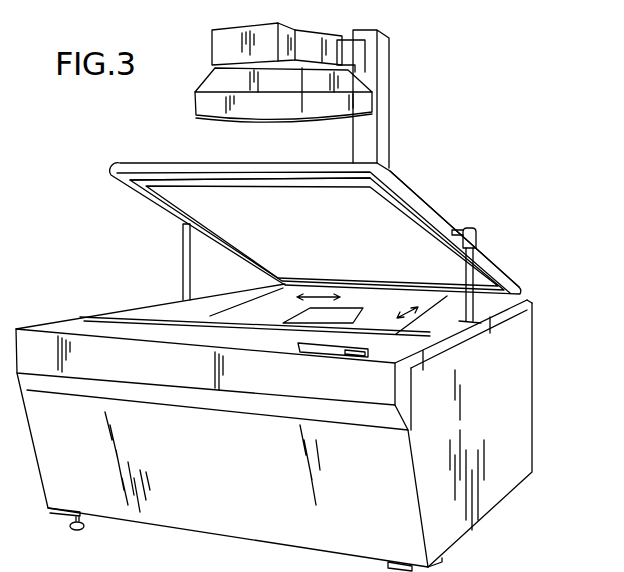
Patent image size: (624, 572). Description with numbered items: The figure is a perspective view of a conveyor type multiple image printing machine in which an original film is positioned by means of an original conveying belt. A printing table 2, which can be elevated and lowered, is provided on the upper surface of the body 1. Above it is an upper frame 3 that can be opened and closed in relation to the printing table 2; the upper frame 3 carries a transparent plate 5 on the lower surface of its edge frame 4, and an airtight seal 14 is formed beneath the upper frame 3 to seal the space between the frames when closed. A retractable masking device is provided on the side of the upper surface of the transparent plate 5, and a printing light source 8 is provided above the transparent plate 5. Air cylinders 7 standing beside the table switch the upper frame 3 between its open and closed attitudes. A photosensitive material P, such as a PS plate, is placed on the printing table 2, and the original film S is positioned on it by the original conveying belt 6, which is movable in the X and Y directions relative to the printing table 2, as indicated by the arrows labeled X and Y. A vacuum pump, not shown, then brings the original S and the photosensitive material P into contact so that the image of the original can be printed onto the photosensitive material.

The body 1 is at (523, 398).
The printing table 2 is at (206, 296).
The upper frame 3 is at (453, 212).
The edge frame 4 is at (407, 187).
The transparent plate 5 is at (334, 229).
The original conveying belt 6 is at (254, 321).
The air cylinder 7 is at (183, 265).
The printing light source 8 is at (282, 100).
The airtight seal 14 is at (248, 182).
The photosensitive material P is at (356, 306).
The original film S is at (352, 300).
The X direction X is at (322, 258).
The Y direction Y is at (396, 316).